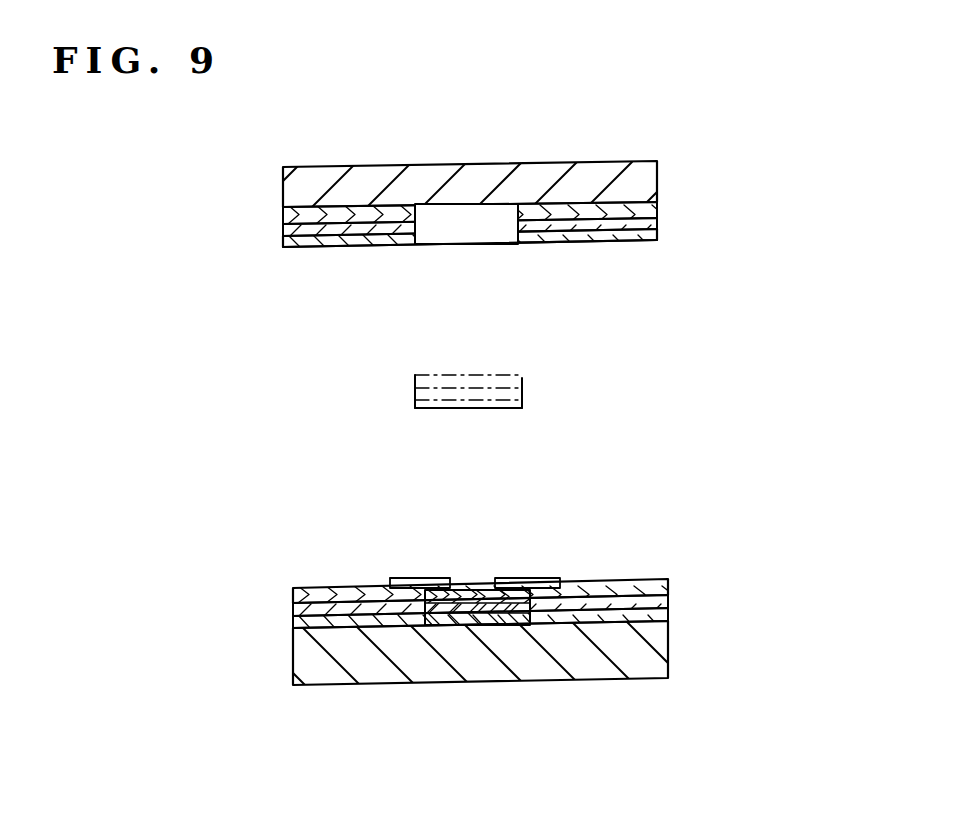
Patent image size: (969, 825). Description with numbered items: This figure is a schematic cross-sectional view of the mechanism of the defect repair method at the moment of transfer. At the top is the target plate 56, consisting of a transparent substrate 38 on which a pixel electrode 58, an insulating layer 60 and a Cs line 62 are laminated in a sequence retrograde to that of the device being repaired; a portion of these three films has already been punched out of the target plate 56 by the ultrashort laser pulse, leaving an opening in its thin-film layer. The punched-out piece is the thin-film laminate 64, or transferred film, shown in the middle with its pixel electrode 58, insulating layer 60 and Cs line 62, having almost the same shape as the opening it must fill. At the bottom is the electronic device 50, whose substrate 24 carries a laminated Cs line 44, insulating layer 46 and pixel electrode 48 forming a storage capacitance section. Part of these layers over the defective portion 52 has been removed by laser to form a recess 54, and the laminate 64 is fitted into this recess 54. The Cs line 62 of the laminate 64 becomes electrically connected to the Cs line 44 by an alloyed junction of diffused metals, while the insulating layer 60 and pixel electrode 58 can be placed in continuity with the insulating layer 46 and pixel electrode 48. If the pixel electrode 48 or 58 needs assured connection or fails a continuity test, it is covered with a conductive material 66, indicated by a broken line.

The substrate 24 is at (645, 648).
The transparent substrate 38 is at (615, 173).
The Cs line 44 is at (650, 617).
The insulating layer 46 is at (650, 602).
The pixel electrode 48 is at (645, 583).
The electronic device 50 is at (550, 613).
The defective portion 52 is at (482, 636).
The recess 54 is at (440, 585).
The target plate 56 is at (516, 402).
The pixel electrode 58 is at (647, 206).
The insulating layer 60 is at (657, 223).
The Cs line 62 is at (603, 242).
The thin-film laminate 64 is at (398, 385).
The conductive material 66 is at (510, 580).